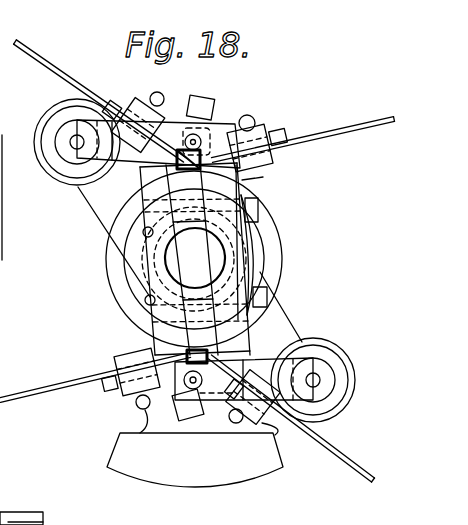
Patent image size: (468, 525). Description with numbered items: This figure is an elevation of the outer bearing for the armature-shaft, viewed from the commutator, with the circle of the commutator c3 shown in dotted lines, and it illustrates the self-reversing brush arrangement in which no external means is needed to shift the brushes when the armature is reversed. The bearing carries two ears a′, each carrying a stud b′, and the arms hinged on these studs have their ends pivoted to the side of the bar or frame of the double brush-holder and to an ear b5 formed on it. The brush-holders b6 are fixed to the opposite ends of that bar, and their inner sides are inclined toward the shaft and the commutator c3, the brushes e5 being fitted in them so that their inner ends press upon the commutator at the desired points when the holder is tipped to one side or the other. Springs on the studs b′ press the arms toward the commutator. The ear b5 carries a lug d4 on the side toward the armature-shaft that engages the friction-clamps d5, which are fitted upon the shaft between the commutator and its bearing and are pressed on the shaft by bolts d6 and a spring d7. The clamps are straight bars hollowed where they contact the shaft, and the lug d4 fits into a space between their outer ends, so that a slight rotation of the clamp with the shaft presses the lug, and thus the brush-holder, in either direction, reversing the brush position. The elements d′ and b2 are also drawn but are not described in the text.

The brushes e5 is at (197, 257).
The brush-holders b6 is at (150, 108).
The ear b5 is at (200, 104).
The ears a′ is at (36, 120).
The pivot d′ is at (204, 141).
The friction-clamps d5 is at (263, 176).
The studs b′ is at (77, 145).
The links b2 is at (120, 165).
The bolts d6 is at (256, 202).
The commutator c3 is at (283, 240).
The spring d7 is at (262, 275).
The lug d4 is at (195, 256).